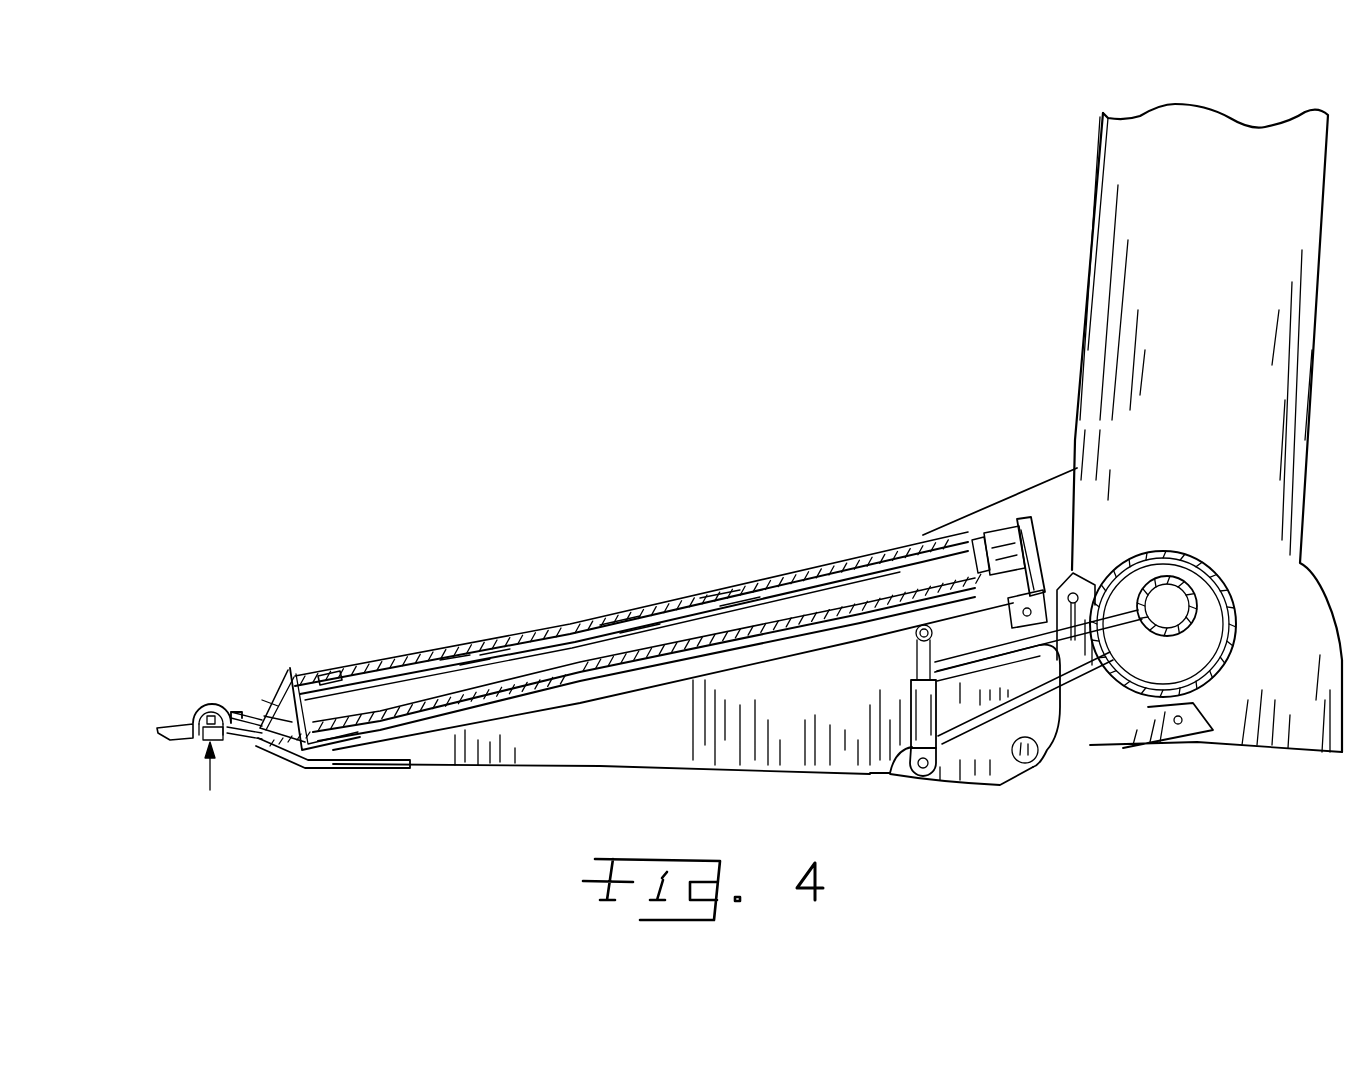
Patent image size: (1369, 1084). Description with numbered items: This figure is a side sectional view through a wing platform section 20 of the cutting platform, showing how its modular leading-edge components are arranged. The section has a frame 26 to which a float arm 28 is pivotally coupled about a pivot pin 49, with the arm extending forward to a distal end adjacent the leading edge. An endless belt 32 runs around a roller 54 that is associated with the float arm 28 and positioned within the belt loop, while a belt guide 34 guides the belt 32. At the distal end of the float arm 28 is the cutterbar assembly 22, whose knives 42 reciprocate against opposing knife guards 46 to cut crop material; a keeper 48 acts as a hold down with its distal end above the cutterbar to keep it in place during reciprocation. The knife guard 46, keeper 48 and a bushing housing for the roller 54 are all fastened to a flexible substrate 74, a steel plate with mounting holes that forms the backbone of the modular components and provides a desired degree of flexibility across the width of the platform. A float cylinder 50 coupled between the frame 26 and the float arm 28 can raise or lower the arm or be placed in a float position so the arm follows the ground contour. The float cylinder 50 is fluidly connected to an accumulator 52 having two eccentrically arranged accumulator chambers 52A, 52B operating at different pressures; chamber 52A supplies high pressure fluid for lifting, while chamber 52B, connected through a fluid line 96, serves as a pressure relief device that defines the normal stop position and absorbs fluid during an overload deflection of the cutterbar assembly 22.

The second wing platform section 20 is at (1100, 202).
The cutterbar assembly 22 is at (210, 790).
The frame 26 is at (1130, 273).
The float arm 28 is at (527, 767).
The endless belt 32 is at (729, 586).
The belt guide 34 is at (325, 665).
The knife 42 is at (167, 727).
The knife guard 46 is at (170, 743).
The keeper 48 is at (212, 702).
The pivot pin 49 is at (1020, 760).
The float cylinder 50 is at (910, 712).
The accumulator 52 is at (1237, 605).
The accumulator chamber 52A is at (1190, 652).
The accumulator chamber 52B is at (1168, 600).
The roller 54 is at (556, 652).
The flexible substrate 74 is at (262, 672).
The fluid line 96 is at (1000, 655).